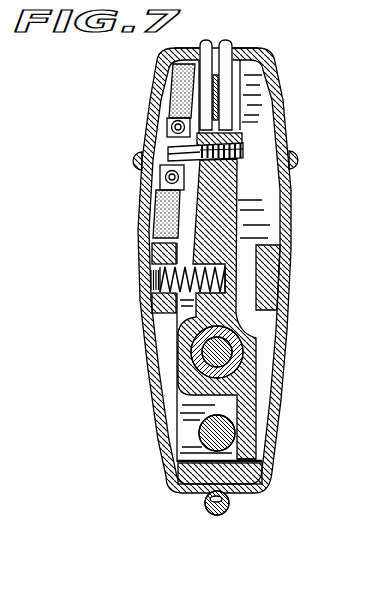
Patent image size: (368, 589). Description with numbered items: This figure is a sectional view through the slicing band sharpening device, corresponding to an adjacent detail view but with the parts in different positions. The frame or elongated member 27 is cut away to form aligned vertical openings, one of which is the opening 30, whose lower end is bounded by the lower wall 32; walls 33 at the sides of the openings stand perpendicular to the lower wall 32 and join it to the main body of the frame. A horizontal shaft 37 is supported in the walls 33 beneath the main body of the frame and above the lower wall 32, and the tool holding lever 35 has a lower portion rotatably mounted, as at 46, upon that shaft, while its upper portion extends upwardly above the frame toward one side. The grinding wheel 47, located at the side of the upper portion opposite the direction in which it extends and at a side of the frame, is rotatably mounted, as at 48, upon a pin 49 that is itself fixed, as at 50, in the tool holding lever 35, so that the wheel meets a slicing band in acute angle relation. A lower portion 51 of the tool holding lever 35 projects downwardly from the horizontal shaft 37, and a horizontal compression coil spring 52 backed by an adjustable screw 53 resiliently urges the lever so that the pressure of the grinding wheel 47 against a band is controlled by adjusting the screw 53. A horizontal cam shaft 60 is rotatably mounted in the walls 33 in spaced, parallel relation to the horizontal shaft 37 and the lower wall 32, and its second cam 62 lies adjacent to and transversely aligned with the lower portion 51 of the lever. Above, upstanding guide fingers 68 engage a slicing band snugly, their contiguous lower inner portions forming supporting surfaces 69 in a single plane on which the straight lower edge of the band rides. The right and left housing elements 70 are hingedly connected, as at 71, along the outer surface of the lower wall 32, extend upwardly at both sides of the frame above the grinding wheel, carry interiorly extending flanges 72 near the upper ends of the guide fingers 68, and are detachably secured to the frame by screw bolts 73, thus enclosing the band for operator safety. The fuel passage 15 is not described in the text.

The fuel passage 15 is at (240, 103).
The frame or elongated member 27 is at (151, 258).
The vertical opening 30 is at (287, 277).
The lower wall 32 is at (190, 477).
The walls 33 is at (187, 395).
The tool holding lever 35 is at (224, 222).
The horizontal shaft 37 is at (205, 350).
The rotatable mounting 46 is at (200, 365).
The grinding wheel 47 is at (178, 100).
The rotatable mounting 48 is at (171, 128).
The pin 49 is at (157, 192).
The fixed mounting 50 is at (232, 185).
The lower portion 51 is at (246, 412).
The compression coil spring 52 is at (150, 308).
The adjustable screw 53 is at (150, 287).
The horizontal cam shaft 60 is at (262, 460).
The second cam 62 is at (227, 438).
The guide fingers 68 is at (221, 40).
The supporting surfaces 69 is at (240, 125).
The housing element 70 is at (140, 230).
The hinge connection 71 is at (205, 503).
The interiorly extending flange 72 is at (165, 47).
The screw bolt 73 is at (136, 161).